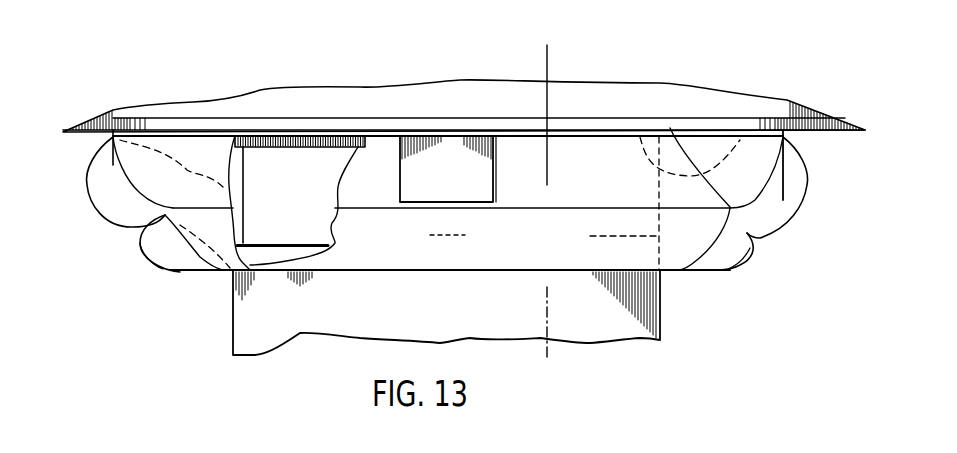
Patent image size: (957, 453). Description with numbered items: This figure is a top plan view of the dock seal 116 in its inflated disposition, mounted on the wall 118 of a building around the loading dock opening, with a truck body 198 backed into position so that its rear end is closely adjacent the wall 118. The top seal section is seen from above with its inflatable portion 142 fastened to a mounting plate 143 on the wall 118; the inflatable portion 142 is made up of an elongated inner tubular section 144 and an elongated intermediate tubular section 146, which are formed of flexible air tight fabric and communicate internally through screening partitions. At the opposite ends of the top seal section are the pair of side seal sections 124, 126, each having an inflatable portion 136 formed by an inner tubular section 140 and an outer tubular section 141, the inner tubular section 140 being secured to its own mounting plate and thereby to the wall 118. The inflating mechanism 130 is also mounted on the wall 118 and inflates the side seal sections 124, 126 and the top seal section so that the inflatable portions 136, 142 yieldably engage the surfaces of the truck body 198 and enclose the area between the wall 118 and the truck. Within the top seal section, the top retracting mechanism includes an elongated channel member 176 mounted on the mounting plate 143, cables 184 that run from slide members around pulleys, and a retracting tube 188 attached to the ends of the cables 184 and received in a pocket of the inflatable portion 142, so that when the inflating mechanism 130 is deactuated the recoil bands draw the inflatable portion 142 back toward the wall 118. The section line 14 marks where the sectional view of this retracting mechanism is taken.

The section line 14- 14 is at (512, 47).
The dock seal 116 is at (843, 161).
The wall 118 is at (777, 124).
The side seal section 124 is at (113, 230).
The side seal section 126 is at (753, 261).
The inflating mechanism 130 is at (440, 156).
The inflatable portion 136 is at (162, 274).
The inner tubular section 140 is at (97, 208).
The outer tubular section 141 is at (162, 267).
The inflatable portion 142 is at (596, 168).
The mounting plate 143 is at (347, 137).
The inner tubular section 144 is at (638, 160).
The intermediate tubular section 146 is at (653, 205).
The channel member 176 is at (308, 143).
The cable 184 is at (245, 187).
The retracting tube 188 is at (262, 250).
The truck body 198 is at (328, 320).